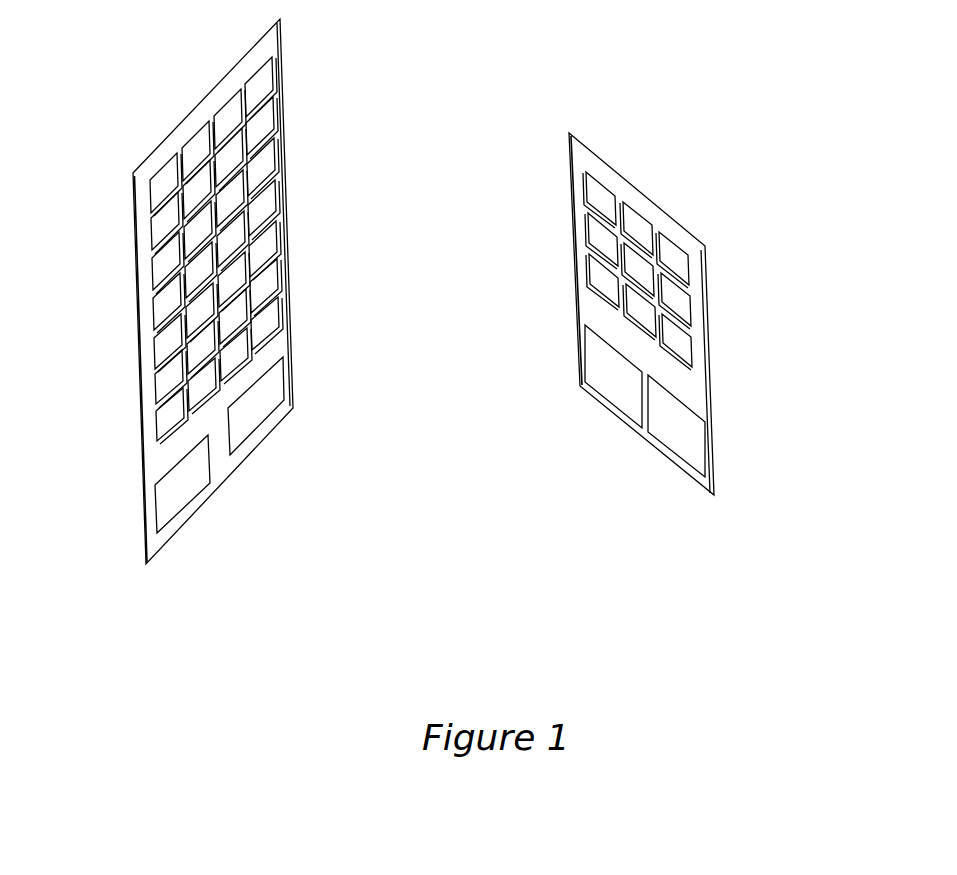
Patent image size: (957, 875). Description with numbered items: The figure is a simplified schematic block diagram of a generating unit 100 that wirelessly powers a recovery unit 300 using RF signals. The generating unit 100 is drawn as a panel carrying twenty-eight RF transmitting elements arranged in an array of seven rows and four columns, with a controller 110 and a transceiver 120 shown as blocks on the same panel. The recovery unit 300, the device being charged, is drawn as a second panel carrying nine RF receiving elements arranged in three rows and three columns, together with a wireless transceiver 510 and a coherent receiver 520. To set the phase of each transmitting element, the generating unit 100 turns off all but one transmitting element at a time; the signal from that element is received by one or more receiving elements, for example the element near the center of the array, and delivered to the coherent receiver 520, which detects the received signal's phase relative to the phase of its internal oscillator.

The generating unit 100 is at (257, 43).
The controller 110 is at (152, 475).
The transceiver 120 is at (286, 402).
The recovery unit 300 is at (568, 132).
The wireless transceiver 510 is at (580, 325).
The coherent receiver 520 is at (707, 407).